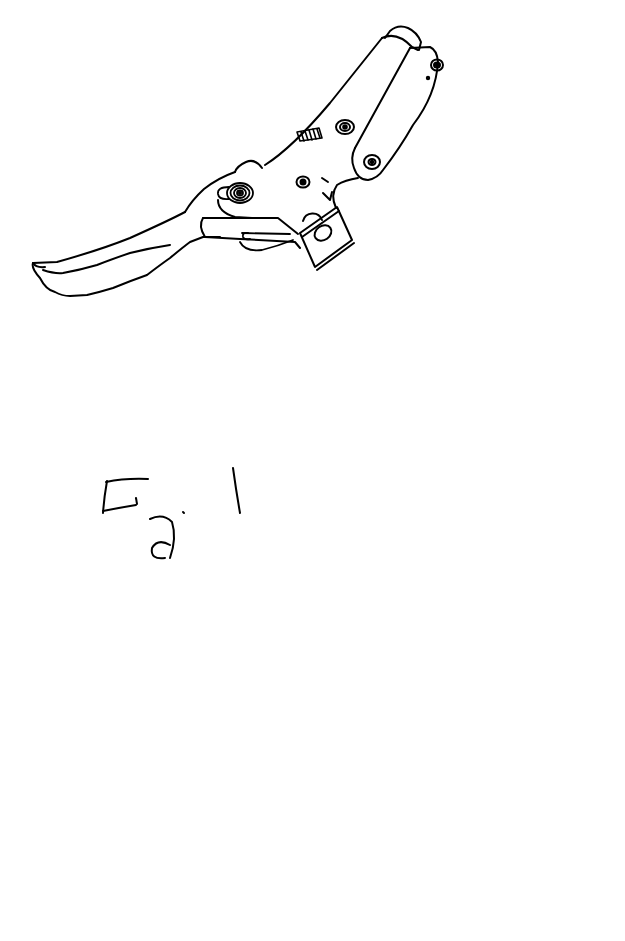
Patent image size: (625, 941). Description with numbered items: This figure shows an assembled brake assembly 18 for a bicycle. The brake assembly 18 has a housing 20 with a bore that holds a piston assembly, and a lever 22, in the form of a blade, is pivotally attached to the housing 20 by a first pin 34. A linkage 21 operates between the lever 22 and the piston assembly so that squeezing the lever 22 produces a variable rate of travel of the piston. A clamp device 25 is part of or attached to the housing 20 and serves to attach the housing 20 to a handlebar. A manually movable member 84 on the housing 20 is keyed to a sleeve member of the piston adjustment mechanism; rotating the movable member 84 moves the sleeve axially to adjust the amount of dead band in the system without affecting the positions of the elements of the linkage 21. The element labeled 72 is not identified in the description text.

The brake assembly 18 is at (227, 139).
The housing 20 is at (352, 90).
The linkage 21 is at (251, 262).
The lever 22 is at (157, 307).
The clamp device 25 is at (385, 237).
The first pin 34 is at (238, 176).
The side bar 72 is at (432, 118).
The manually movable member 84 is at (297, 128).